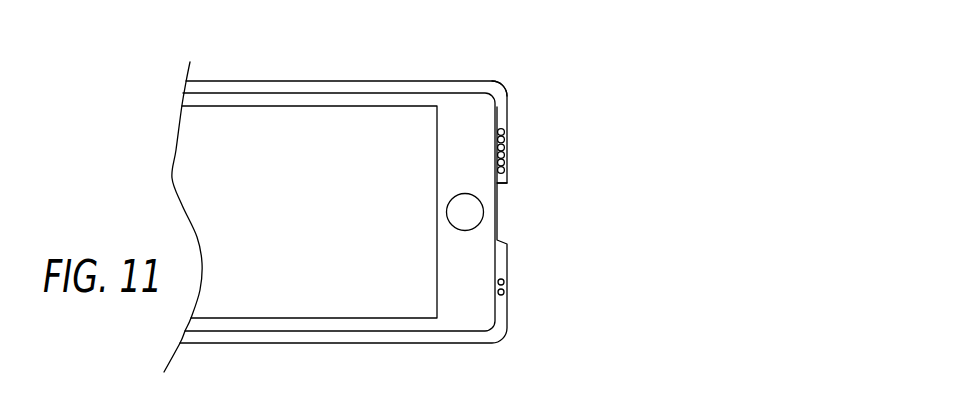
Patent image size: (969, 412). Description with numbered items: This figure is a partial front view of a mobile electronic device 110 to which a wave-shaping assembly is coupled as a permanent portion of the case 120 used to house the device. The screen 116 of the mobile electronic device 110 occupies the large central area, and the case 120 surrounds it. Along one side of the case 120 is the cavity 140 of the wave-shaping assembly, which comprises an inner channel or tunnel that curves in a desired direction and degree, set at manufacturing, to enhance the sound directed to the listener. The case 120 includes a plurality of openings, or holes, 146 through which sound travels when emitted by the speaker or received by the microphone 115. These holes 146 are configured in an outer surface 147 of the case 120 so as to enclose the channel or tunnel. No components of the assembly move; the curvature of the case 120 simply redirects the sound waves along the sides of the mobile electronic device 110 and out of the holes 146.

The mobile electronic device 110 is at (507, 209).
The microphone 115 is at (515, 287).
The screen 116 is at (295, 127).
The case 120 is at (493, 82).
The cavity 140 is at (502, 115).
The openings or holes 146 is at (508, 160).
The outer surface 147 is at (508, 143).